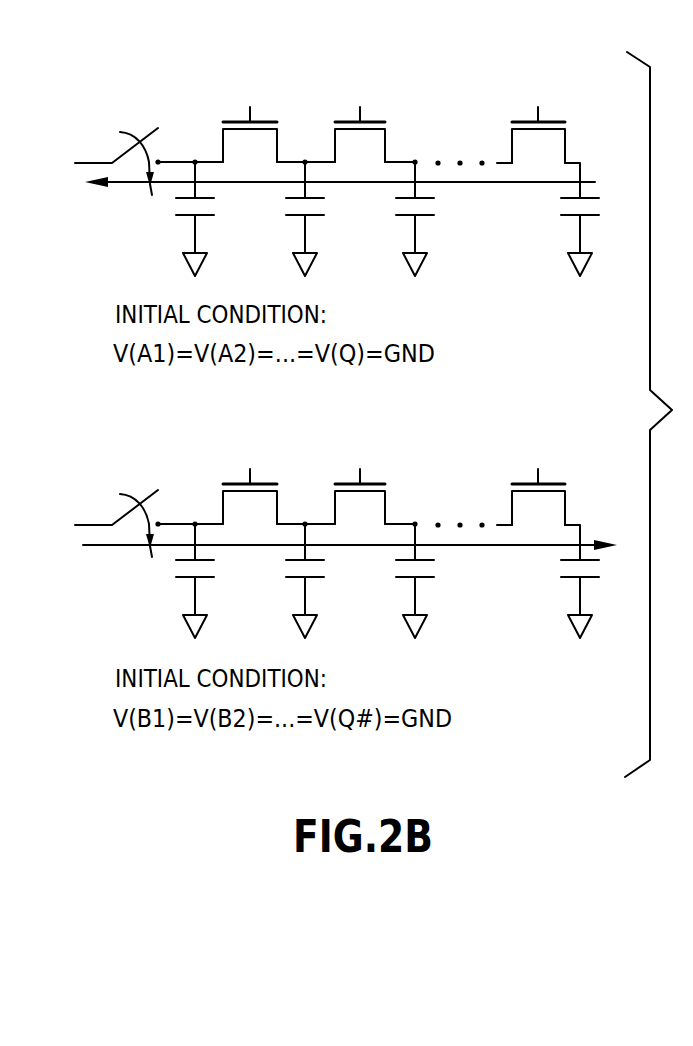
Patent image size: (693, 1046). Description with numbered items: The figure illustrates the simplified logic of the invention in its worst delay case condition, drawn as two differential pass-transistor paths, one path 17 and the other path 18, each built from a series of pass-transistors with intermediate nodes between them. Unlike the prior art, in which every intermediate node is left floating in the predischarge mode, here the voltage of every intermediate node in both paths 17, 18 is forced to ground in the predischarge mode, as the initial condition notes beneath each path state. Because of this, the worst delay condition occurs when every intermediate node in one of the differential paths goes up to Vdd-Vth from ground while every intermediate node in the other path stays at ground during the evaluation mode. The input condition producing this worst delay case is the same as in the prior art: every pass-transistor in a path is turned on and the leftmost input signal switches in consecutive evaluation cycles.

The first transistor chain (In0 input, nodes A1..Q) 17 is at (443, 97).
The second complementary transistor chain (In0# input, nodes B1..Q#) 18 is at (443, 459).